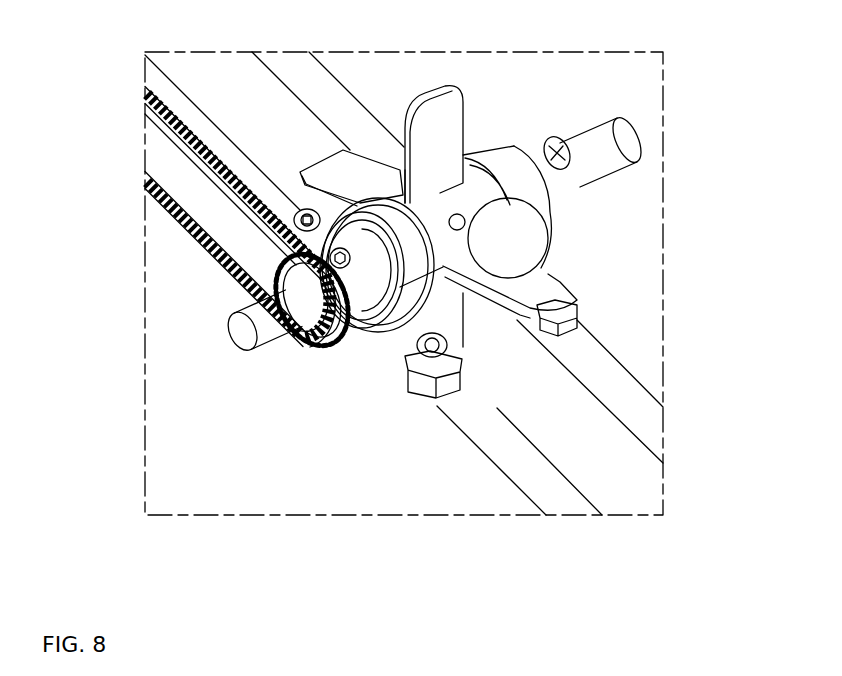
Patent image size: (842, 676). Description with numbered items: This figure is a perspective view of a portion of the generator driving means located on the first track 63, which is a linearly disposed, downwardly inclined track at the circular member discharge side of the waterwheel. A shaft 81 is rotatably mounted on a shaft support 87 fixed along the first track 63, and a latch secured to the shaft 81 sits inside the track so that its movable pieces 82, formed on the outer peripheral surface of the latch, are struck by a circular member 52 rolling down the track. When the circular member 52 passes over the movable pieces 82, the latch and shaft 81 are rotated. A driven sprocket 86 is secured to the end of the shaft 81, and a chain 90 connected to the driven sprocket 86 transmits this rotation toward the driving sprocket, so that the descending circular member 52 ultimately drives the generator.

The circular member 52 is at (523, 248).
The first track 63 is at (620, 387).
The shaft 81 is at (625, 141).
The movable piece 82 is at (440, 125).
The driven sprocket 86 is at (283, 262).
The shaft support 87 is at (413, 318).
The chain 90 is at (189, 133).